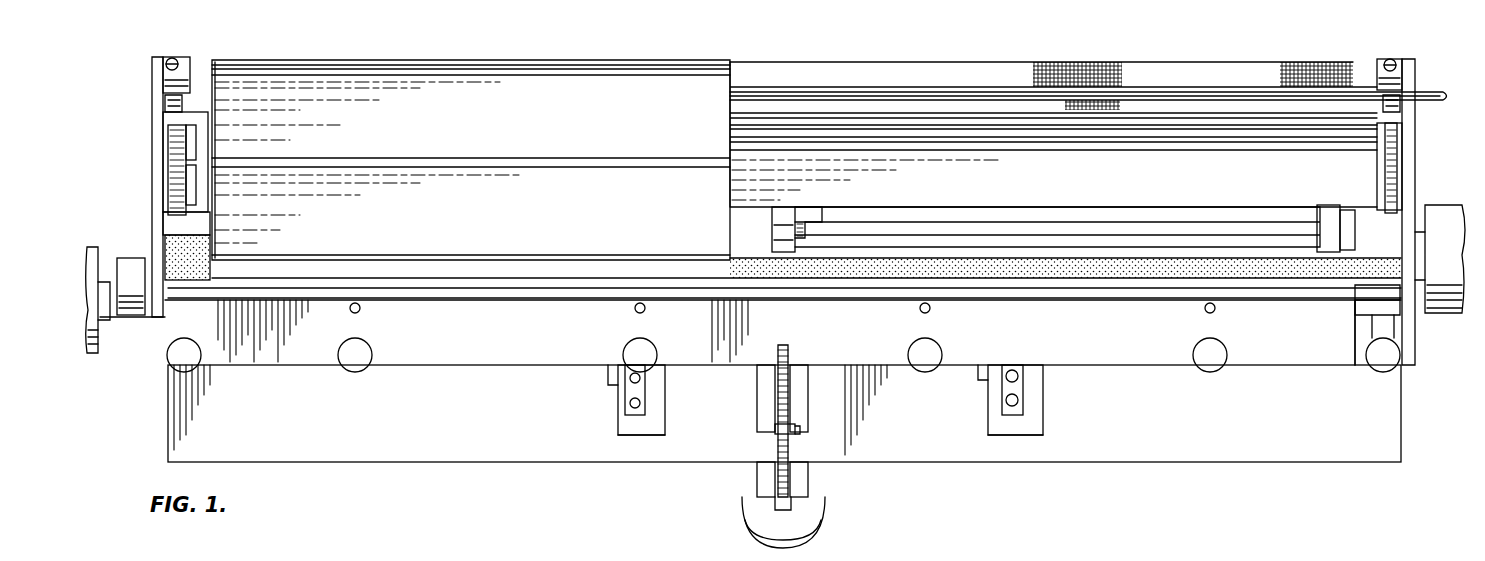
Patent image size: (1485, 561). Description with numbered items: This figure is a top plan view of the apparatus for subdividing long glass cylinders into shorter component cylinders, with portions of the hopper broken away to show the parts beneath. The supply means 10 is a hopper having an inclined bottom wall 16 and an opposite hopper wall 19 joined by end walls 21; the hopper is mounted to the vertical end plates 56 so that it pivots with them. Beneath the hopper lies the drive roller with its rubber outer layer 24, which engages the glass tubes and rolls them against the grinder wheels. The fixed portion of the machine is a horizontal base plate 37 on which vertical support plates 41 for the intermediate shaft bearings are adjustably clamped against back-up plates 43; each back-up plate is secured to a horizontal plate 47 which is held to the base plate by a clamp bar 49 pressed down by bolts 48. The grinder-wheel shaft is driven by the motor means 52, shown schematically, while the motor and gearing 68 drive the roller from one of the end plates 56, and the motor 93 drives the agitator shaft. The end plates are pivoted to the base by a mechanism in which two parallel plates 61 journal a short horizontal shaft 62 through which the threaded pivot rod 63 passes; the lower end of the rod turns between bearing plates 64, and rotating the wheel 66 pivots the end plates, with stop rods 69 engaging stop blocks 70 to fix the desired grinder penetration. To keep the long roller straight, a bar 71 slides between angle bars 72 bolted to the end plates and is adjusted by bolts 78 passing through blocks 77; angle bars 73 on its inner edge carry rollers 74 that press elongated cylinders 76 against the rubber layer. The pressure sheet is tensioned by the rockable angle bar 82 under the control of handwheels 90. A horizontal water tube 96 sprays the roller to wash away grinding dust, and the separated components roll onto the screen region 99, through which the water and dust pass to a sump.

The supply means 10 is at (545, 62).
The inclined bottom wall 16 is at (385, 226).
The hopper wall 19 is at (585, 260).
The end walls 21 is at (215, 130).
The outer layer 24 is at (1118, 292).
The base plate 37 is at (1180, 462).
The support plates 41 is at (608, 375).
The back-up plates 43 is at (990, 418).
The horizontal plate 47 is at (660, 426).
The bolts 48 is at (1012, 400).
The clamp bar 49 is at (640, 388).
The motor means 52 is at (95, 355).
The end plates 56 is at (160, 128).
The parallel plates 61 is at (805, 385).
The short horizontal shaft 62 is at (795, 432).
The pivot rod 63 is at (790, 358).
The bearing plates 64 is at (757, 483).
The wheel 66 is at (815, 525).
The motor and gearing 68 is at (1455, 315).
The stop rods 69 is at (1392, 358).
The stop blocks 70 is at (1362, 365).
The bar 71 is at (1180, 174).
The angle bars 72 is at (1380, 170).
The angle bars 73 is at (815, 210).
The rollers 74 is at (787, 228).
The elongated cylinders 76 is at (930, 235).
The blocks 77 is at (186, 70).
The bolts 78 is at (170, 60).
The rockable angle bar 82 is at (1296, 368).
The handwheels 90 is at (633, 350).
The motor 93 is at (132, 258).
The water tube 96 is at (925, 92).
The screen region 99 is at (1110, 65).